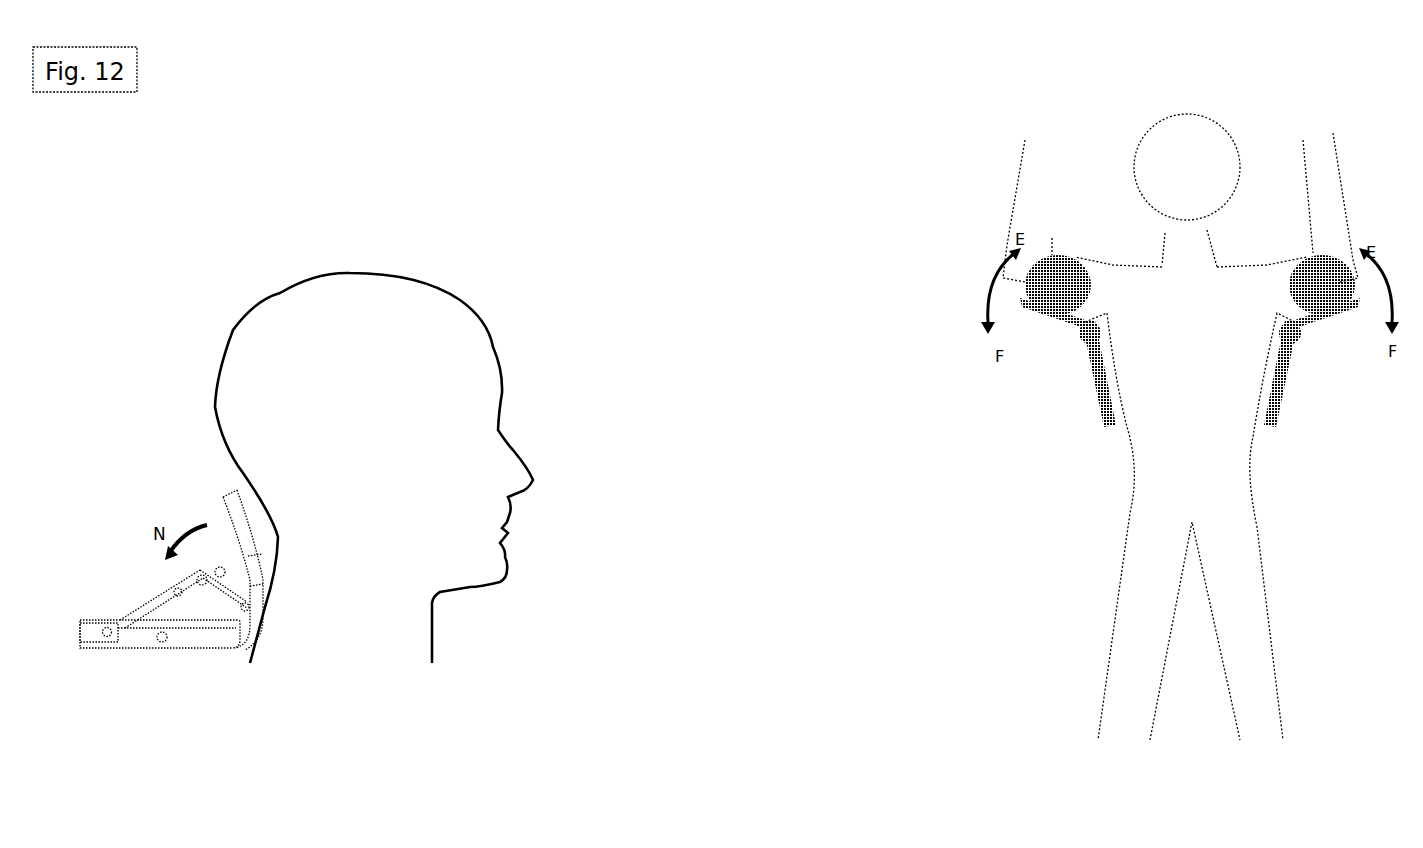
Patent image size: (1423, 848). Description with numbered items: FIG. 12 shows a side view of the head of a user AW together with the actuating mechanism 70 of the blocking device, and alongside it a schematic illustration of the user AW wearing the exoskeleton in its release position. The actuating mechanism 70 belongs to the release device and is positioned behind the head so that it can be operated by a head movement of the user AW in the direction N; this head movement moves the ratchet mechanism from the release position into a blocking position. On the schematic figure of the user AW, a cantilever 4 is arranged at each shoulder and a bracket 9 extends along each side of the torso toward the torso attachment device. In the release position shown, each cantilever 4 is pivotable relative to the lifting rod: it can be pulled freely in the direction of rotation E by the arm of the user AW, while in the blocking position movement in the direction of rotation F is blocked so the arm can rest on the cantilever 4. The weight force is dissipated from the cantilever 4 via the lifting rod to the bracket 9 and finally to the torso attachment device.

The actuating mechanism 70 is at (176, 491).
The cantilever 4 is at (1048, 317).
The bracket 9 is at (1105, 402).
The user AW is at (1163, 165).